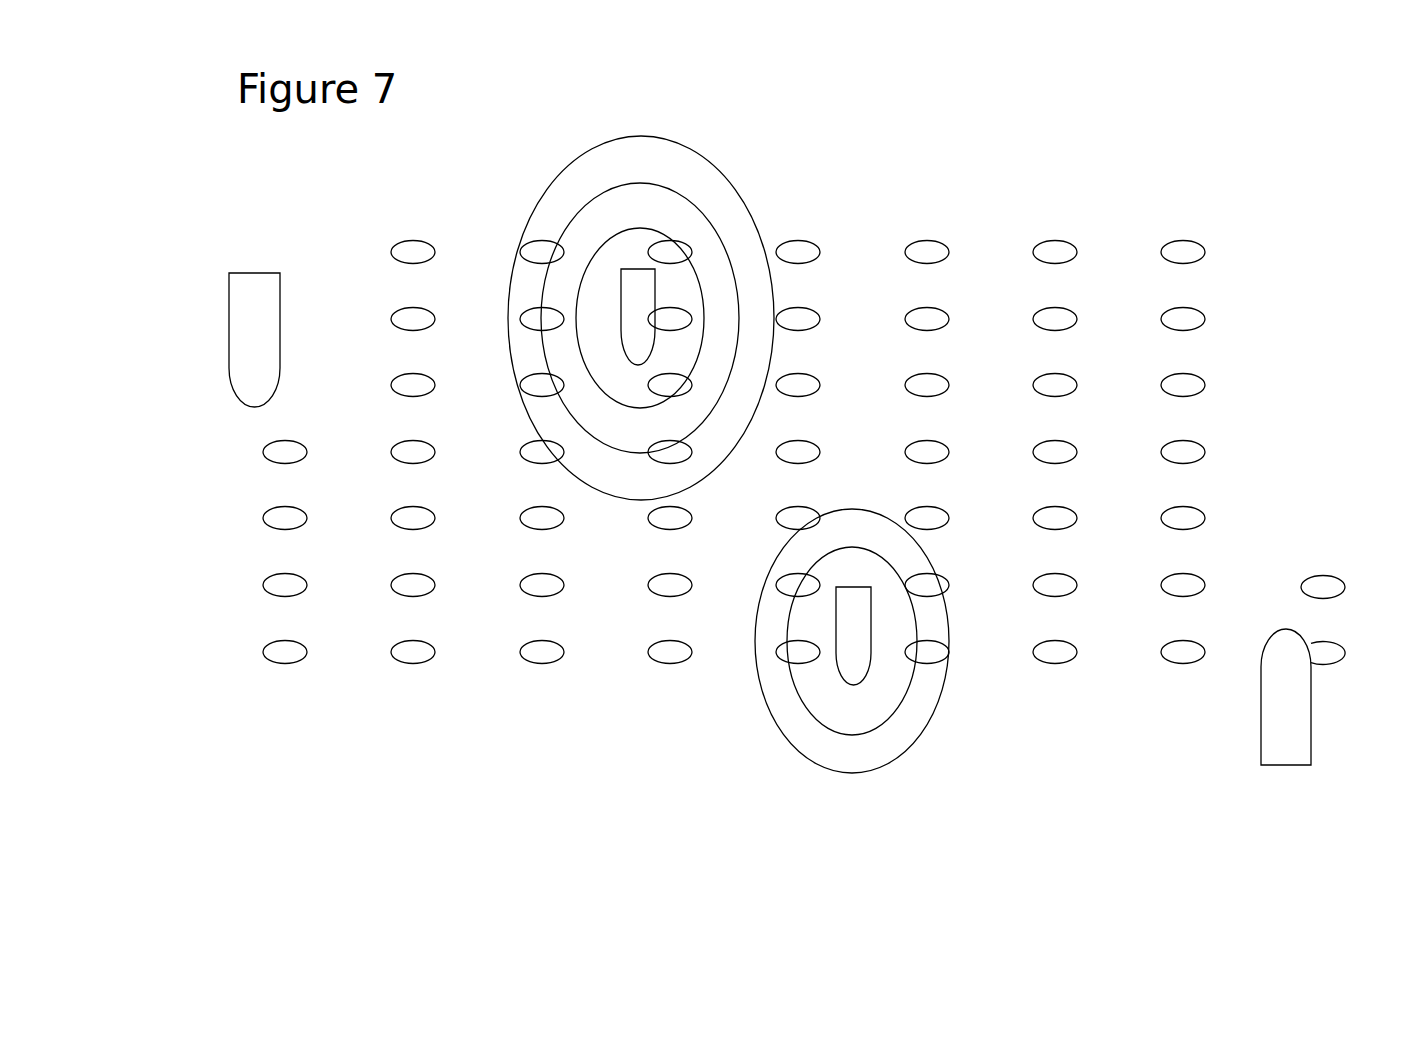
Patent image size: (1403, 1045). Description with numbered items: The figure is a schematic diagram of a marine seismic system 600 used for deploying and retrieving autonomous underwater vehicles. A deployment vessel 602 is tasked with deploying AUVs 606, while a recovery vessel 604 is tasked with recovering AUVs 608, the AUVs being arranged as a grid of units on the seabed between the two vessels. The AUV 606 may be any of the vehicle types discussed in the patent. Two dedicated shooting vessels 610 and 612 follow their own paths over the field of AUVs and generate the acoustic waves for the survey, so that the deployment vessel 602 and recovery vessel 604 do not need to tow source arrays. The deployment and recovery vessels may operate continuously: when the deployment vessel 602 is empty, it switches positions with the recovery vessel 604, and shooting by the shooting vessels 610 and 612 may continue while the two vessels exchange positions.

The seismic system 600 is at (952, 173).
The deployment vessel 602 is at (1312, 715).
The recovery vessel 604 is at (239, 321).
The AUV 606 is at (1320, 577).
The AUV 608 is at (275, 452).
The shooting vessel 610 is at (627, 292).
The shooting vessel 612 is at (858, 653).